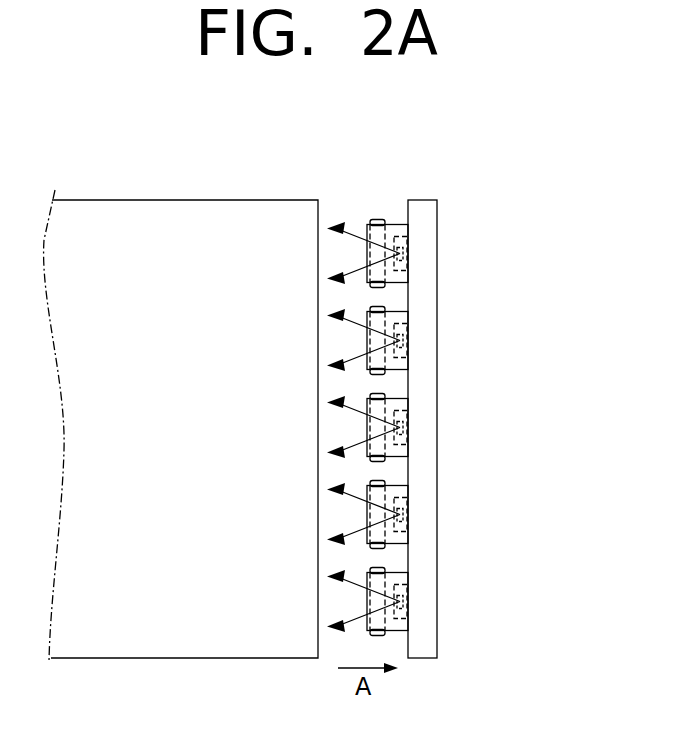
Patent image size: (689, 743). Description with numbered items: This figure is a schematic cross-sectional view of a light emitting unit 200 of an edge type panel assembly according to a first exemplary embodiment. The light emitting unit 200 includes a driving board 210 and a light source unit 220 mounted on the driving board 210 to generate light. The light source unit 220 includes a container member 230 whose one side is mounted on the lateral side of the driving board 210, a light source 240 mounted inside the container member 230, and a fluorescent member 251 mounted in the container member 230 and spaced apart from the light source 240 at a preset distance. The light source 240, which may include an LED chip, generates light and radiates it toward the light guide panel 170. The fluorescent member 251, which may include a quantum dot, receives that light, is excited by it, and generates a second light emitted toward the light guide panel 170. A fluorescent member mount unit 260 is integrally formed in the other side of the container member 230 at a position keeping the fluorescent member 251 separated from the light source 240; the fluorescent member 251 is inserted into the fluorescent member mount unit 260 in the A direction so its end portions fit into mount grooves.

The light guide panel 170 is at (174, 218).
The light emitting unit 200 is at (470, 577).
The driving board 210 is at (431, 500).
The light source unit 220 is at (485, 117).
The container member 230 is at (400, 232).
The light source 240 is at (410, 277).
The fluorescent member 251 is at (376, 220).
The fluorescent member mount unit 260 is at (385, 233).